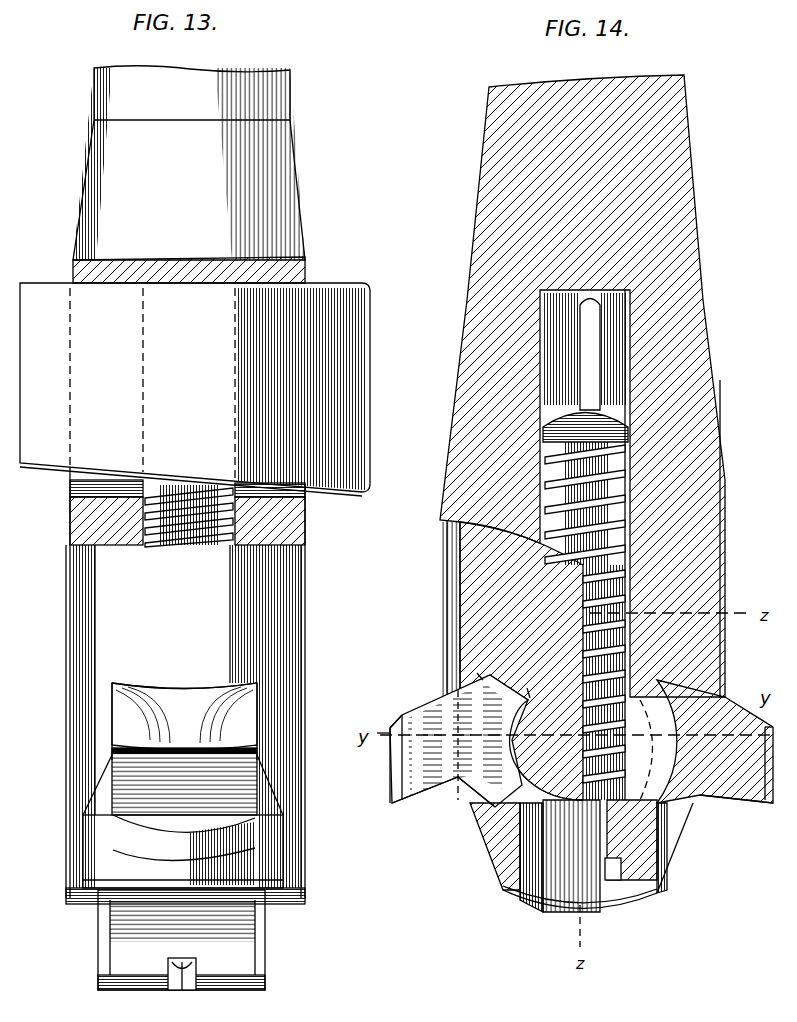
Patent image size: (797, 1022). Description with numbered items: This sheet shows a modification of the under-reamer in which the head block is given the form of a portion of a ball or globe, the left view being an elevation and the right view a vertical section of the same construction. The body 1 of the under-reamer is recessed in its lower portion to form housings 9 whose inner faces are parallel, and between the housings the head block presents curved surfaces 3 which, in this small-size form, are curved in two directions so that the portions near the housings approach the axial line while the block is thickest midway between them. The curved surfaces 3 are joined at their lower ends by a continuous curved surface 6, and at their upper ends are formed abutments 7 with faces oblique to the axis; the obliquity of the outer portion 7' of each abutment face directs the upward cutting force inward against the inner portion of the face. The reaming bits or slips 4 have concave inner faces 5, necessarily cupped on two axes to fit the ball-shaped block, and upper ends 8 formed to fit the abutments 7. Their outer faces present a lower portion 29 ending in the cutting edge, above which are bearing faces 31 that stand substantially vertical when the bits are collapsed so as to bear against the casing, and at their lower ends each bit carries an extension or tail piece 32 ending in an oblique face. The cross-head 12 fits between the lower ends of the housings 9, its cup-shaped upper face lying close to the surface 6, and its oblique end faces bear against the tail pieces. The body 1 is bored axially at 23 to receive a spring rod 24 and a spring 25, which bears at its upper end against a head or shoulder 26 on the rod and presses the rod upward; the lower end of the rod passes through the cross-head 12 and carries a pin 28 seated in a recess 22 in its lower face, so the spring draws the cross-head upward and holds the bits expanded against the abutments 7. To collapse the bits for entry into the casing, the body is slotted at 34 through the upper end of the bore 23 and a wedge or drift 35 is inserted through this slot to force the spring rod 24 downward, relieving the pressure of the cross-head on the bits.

In FIG. 13, the body of the under-reamer 1 is at (82, 221).
In FIG. 14, the body of the under-reamer 1 is at (690, 263).
In FIG. 13, the curved surfaces 3 is at (184, 721).
In FIG. 14, the curved surfaces 3 is at (576, 748).
In FIG. 14, the reaming bits or slips 4 is at (727, 713).
In FIG. 14, the inner faces 5 is at (513, 717).
In FIG. 14, the curved surface 6 is at (560, 810).
In FIG. 13, the abutments 7 is at (184, 675).
In FIG. 14, the abutments 7 is at (570, 722).
In FIG. 14, the outer portion of the face of the abutment 7' is at (556, 663).
In FIG. 13, the upper ends 8 is at (128, 767).
In FIG. 14, the upper ends 8 is at (428, 698).
In FIG. 13, the housings 9 is at (295, 798).
In FIG. 13, the cross-head 12 is at (125, 940).
In FIG. 14, the cross-head 12 is at (653, 862).
In FIG. 14, the recess 22 is at (640, 890).
In FIG. 13, the bore 23 is at (143, 528).
In FIG. 14, the bore 23 is at (627, 552).
In FIG. 13, the spring rod 24 is at (178, 990).
In FIG. 14, the spring rod 24 is at (617, 527).
In FIG. 14, the spring 25 is at (622, 447).
In FIG. 14, the head or shoulder 26 is at (617, 410).
In FIG. 13, the pin 28 is at (188, 990).
In FIG. 14, the pin 28 is at (610, 880).
In FIG. 13, the lower portion 29 is at (115, 865).
In FIG. 14, the lower portion 29 is at (393, 776).
In FIG. 13, the bearing faces 31 is at (120, 833).
In FIG. 14, the bearing faces 31 is at (402, 715).
In FIG. 14, the extension or tail piece 32 is at (456, 788).
In FIG. 13, the slot 34 is at (78, 488).
In FIG. 14, the slot 34 is at (592, 332).
In FIG. 13, the wedge or drift 35 is at (368, 365).